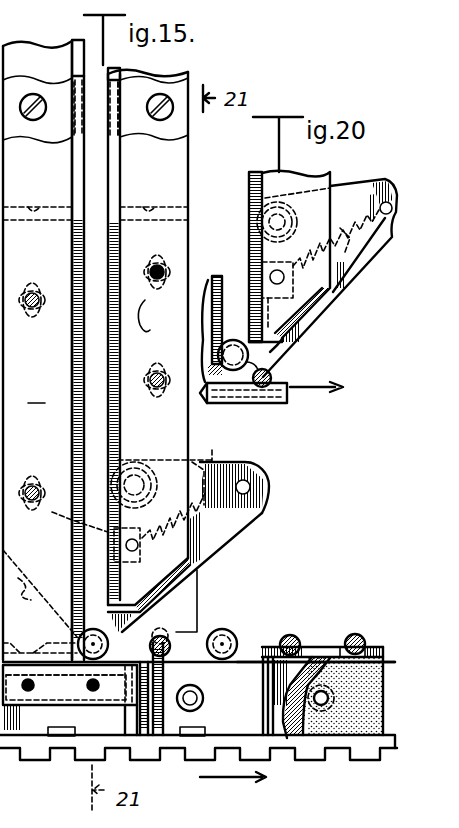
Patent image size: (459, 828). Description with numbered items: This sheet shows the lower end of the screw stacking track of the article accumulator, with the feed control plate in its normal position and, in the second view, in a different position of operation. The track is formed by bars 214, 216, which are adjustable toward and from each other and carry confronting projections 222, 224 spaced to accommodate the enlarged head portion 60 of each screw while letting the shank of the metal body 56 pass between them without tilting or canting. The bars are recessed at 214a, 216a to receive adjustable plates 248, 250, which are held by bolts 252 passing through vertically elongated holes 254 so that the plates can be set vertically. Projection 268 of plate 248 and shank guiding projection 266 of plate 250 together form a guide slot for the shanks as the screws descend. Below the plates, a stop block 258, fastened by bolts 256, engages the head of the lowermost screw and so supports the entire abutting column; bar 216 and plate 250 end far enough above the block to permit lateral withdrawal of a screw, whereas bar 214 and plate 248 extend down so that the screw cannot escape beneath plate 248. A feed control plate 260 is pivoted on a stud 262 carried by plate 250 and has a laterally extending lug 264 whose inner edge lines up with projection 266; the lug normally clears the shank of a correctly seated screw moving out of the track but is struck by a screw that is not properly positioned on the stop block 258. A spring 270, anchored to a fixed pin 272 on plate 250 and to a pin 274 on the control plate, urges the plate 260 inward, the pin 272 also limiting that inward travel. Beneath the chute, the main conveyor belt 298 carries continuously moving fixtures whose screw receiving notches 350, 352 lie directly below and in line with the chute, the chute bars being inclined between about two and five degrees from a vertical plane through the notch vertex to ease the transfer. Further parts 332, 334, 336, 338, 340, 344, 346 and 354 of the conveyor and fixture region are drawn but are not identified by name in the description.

In FIG. 15, the bar 214 is at (28, 58).
In FIG. 20, the bar 214 is at (230, 266).
In FIG. 15, the bar 216 is at (175, 75).
In FIG. 20, the bar 216 is at (275, 172).
In FIG. 15, the confronting projection 222 is at (75, 160).
In FIG. 15, the confronting projection 224 is at (112, 170).
In FIG. 15, the recess 214a is at (33, 212).
In FIG. 15, the recess 216a is at (148, 212).
In FIG. 15, the vertically elongated hole 254 is at (38, 285).
In FIG. 15, the bolt 252 is at (42, 300).
In FIG. 15, the projection 268 is at (88, 380).
In FIG. 15, the adjustable plate 248 is at (72, 405).
In FIG. 20, the adjustable plate 248 is at (256, 285).
In FIG. 15, the adjustable plate 250 is at (160, 344).
In FIG. 20, the adjustable plate 250 is at (248, 184).
In FIG. 15, the shank guiding projection 266 is at (110, 430).
In FIG. 15, the stud 262 is at (148, 462).
In FIG. 20, the stud 262 is at (265, 216).
In FIG. 15, the fixed pin 272 is at (108, 535).
In FIG. 20, the fixed pin 272 is at (262, 250).
In FIG. 15, the enlarged head portion 60 is at (72, 620).
In FIG. 20, the enlarged head portion 60 is at (242, 340).
In FIG. 15, the spring 270 is at (203, 478).
In FIG. 20, the spring 270 is at (348, 245).
In FIG. 15, the pin 274 is at (250, 482).
In FIG. 20, the pin 274 is at (382, 232).
In FIG. 15, the feed control plate 260 is at (262, 498).
In FIG. 20, the feed control plate 260 is at (388, 182).
In FIG. 15, the laterally extending lug 264 is at (145, 610).
In FIG. 20, the laterally extending lug 264 is at (285, 352).
In FIG. 15, the screw receiving notch 352 is at (278, 640).
In FIG. 20, the screw receiving notch 352 is at (212, 403).
In FIG. 15, the metal body 56 is at (160, 660).
In FIG. 20, the metal body 56 is at (272, 375).
In FIG. 15, the support 334 is at (343, 640).
In FIG. 15, the bracket 338 is at (298, 657).
In FIG. 15, the screw receiving notch 350 is at (366, 655).
In FIG. 20, the screw receiving notch 350 is at (268, 405).
In FIG. 15, the bolt 256 is at (30, 686).
In FIG. 15, the support plate 340 is at (278, 680).
In FIG. 15, the bushing 336 is at (292, 696).
In FIG. 15, the foot 346 is at (66, 728).
In FIG. 15, the foot 344 is at (172, 736).
In FIG. 15, the stop block 258 is at (42, 695).
In FIG. 15, the main conveyor belt 298 is at (66, 770).
In FIG. 15, the base plate 354 is at (320, 712).
In FIG. 15, the block 332 is at (357, 715).